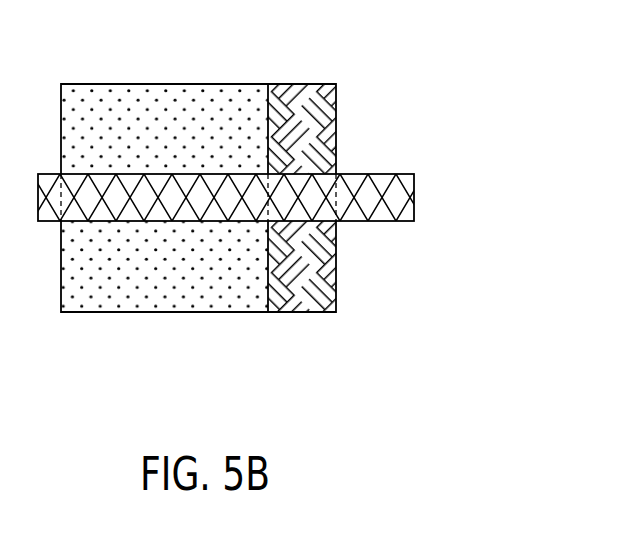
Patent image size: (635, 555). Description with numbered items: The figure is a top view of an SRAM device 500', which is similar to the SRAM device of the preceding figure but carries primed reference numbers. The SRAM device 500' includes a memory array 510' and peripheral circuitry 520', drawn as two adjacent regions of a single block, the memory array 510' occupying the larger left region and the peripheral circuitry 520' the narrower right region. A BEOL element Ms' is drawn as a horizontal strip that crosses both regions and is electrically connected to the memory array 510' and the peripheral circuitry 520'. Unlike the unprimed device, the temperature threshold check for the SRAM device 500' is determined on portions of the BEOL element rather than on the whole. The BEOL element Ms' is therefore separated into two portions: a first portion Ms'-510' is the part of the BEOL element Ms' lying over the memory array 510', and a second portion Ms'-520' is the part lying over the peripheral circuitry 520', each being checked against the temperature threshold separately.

The SRAM device 500' is at (317, 205).
The memory array 510' is at (164, 227).
The peripheral circuitry 520' is at (306, 227).
The BEOL element Ms' is at (226, 131).
The first portion Ms'-510' is at (164, 131).
The second portion Ms'-520' is at (312, 131).